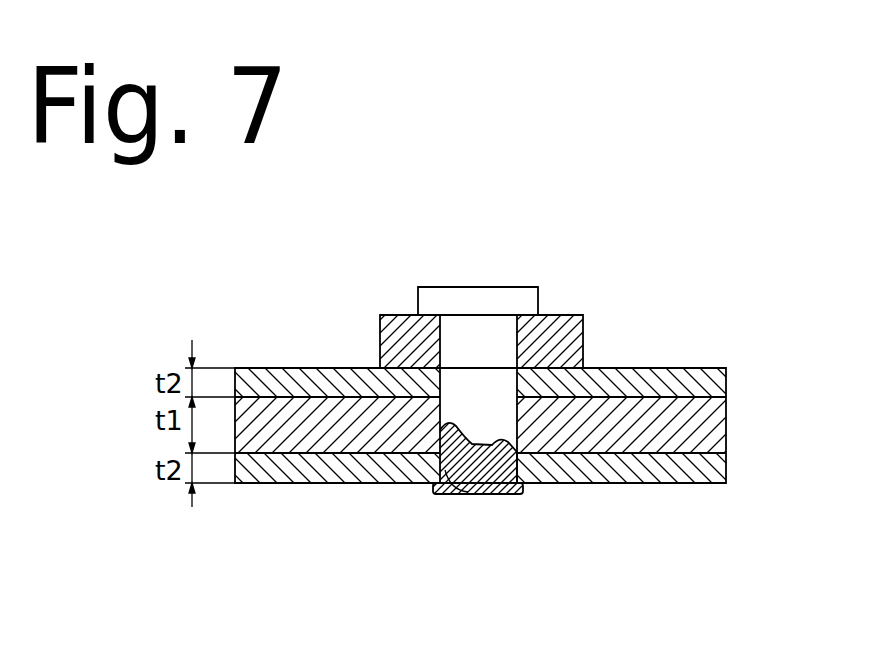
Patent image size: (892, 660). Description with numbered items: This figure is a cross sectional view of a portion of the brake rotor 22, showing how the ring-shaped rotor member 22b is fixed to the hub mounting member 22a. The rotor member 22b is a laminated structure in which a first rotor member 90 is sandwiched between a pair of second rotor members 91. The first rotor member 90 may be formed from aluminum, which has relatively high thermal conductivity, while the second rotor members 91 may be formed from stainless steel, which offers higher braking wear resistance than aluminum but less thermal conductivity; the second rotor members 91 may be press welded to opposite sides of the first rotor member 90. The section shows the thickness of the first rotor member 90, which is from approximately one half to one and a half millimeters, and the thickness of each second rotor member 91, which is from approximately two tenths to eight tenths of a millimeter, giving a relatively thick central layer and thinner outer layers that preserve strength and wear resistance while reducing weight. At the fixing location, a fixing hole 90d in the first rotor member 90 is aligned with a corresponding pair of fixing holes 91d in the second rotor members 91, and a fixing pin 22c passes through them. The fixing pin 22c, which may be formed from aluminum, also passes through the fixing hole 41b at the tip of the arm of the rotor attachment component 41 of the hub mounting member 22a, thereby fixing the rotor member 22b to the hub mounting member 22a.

The brake rotor 22 is at (692, 365).
The hub mounting member 22a is at (544, 338).
The rotor member 22b is at (727, 190).
The fixing pin 22c is at (474, 297).
The rotor attachment component 41 is at (390, 313).
The fixing hole 41b is at (490, 446).
The first rotor member 90 is at (616, 429).
The second rotor member 91 is at (592, 372).
The fixing hole 90d is at (450, 470).
The fixing hole 91d is at (467, 480).